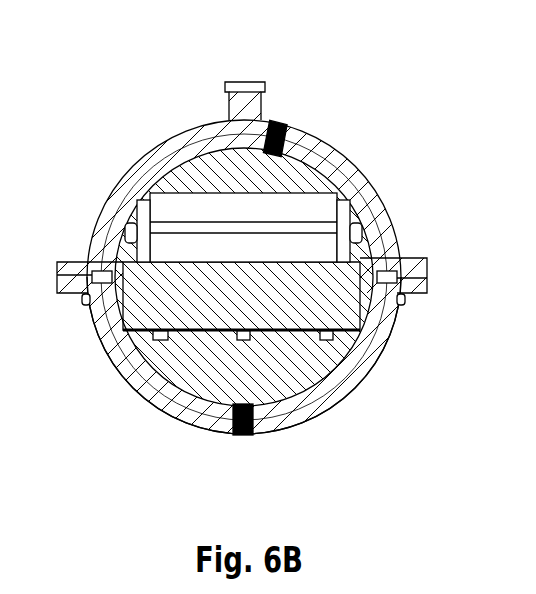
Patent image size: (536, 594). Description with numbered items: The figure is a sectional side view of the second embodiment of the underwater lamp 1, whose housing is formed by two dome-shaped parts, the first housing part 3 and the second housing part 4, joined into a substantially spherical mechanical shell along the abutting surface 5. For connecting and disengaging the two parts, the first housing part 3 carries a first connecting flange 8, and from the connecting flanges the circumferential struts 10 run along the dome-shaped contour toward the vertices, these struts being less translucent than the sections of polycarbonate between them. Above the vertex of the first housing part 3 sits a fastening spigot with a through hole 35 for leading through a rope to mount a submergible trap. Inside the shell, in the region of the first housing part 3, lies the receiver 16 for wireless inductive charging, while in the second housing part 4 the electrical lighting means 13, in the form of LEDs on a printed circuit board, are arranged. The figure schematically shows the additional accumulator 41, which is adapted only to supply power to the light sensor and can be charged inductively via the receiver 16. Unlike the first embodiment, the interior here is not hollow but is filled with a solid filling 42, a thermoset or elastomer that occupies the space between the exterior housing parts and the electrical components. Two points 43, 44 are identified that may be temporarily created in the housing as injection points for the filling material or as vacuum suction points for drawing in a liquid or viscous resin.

The lamp 1 is at (366, 116).
The first housing part 3 is at (177, 148).
The second housing part 4 is at (167, 413).
The abutting surface 5 is at (393, 257).
The first connecting flange 8 is at (76, 262).
The circumferential struts 10 is at (143, 160).
The electrical lighting means 13 is at (123, 365).
The receiver 16 is at (150, 217).
The through hole 35 is at (237, 98).
The additional accumulator 41 is at (320, 203).
The solid filling 42 is at (308, 365).
The injection point 43 is at (272, 123).
The injection point 44 is at (238, 434).